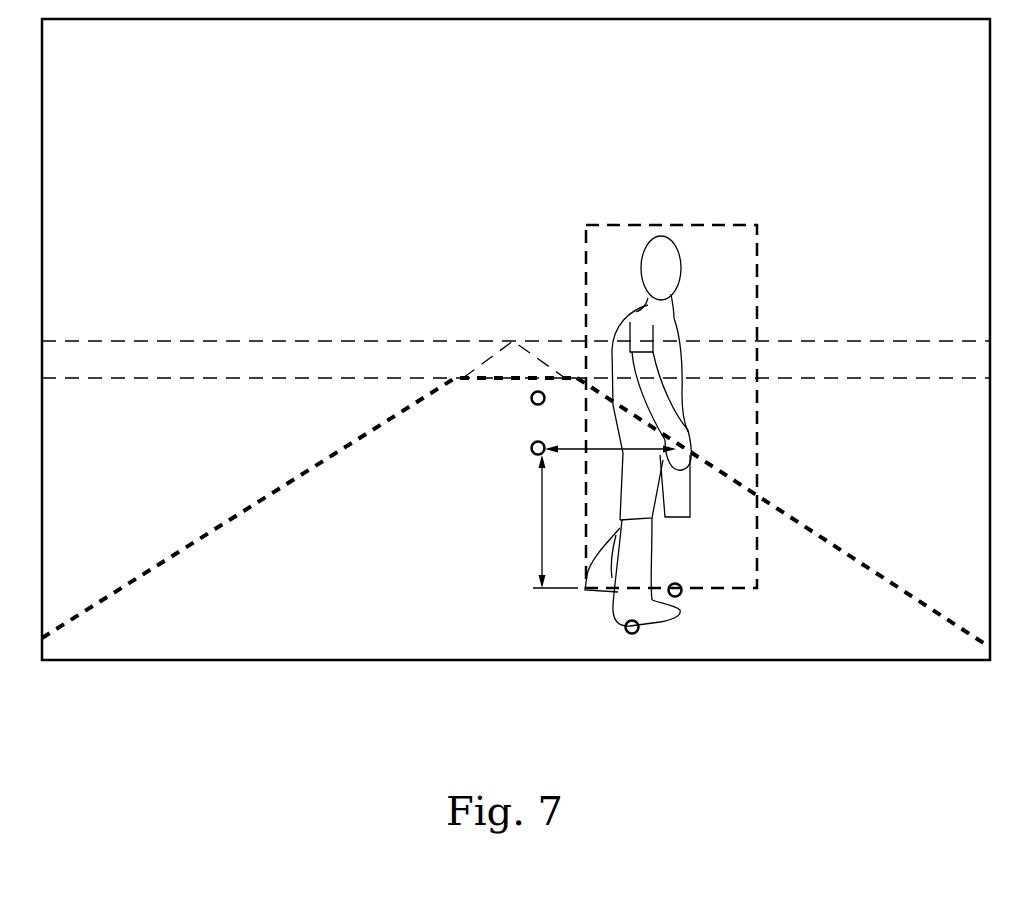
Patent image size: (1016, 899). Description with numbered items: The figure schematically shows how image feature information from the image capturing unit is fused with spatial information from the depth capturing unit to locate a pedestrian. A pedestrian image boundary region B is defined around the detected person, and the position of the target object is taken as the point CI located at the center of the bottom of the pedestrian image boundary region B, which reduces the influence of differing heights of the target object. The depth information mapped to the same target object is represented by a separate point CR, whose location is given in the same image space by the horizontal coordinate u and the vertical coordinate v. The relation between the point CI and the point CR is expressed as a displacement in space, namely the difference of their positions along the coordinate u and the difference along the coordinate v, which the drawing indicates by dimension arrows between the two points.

The pedestrian image boundary region B is at (672, 224).
The depth-mapped point CR is at (626, 623).
The bottom-center point of boundary region CI is at (684, 597).
The horizontal image coordinate u is at (309, 508).
The vertical image coordinate v is at (782, 512).